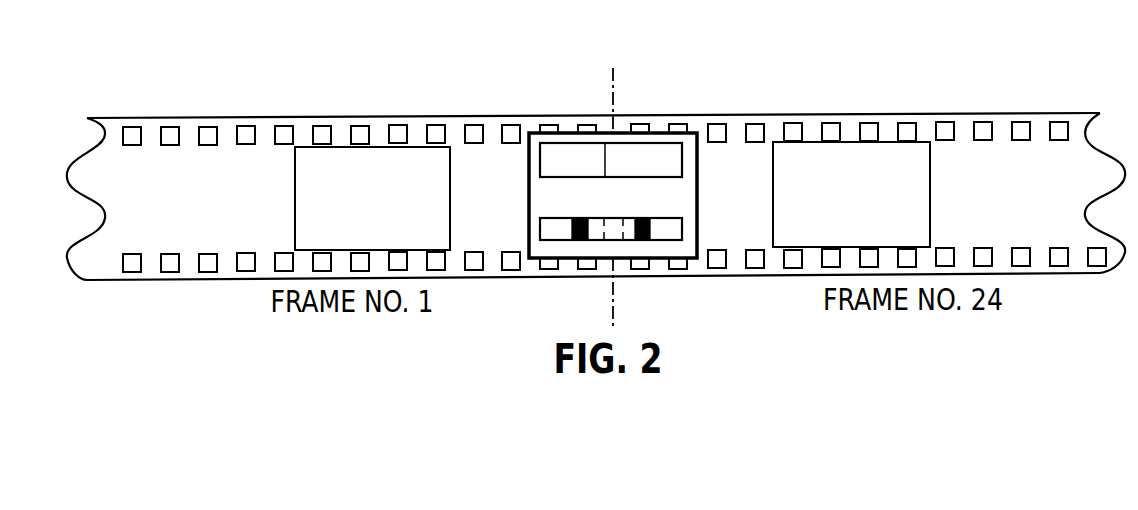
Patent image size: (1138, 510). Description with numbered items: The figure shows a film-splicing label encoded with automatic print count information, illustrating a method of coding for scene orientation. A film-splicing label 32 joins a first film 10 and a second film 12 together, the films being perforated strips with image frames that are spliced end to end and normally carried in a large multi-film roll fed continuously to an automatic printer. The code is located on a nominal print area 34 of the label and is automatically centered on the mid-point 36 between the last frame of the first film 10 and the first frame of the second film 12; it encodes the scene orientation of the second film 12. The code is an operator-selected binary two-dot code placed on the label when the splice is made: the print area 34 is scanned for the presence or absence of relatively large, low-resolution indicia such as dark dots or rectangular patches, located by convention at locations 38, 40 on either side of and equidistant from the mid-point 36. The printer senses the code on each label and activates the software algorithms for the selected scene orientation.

The first film 10 is at (888, 100).
The second film 12 is at (245, 111).
The film-splicing label 32 is at (569, 118).
The nominal print area 34 is at (683, 229).
The mid-point 36 is at (614, 90).
The dot location 38 is at (648, 241).
The dot location 40 is at (571, 242).